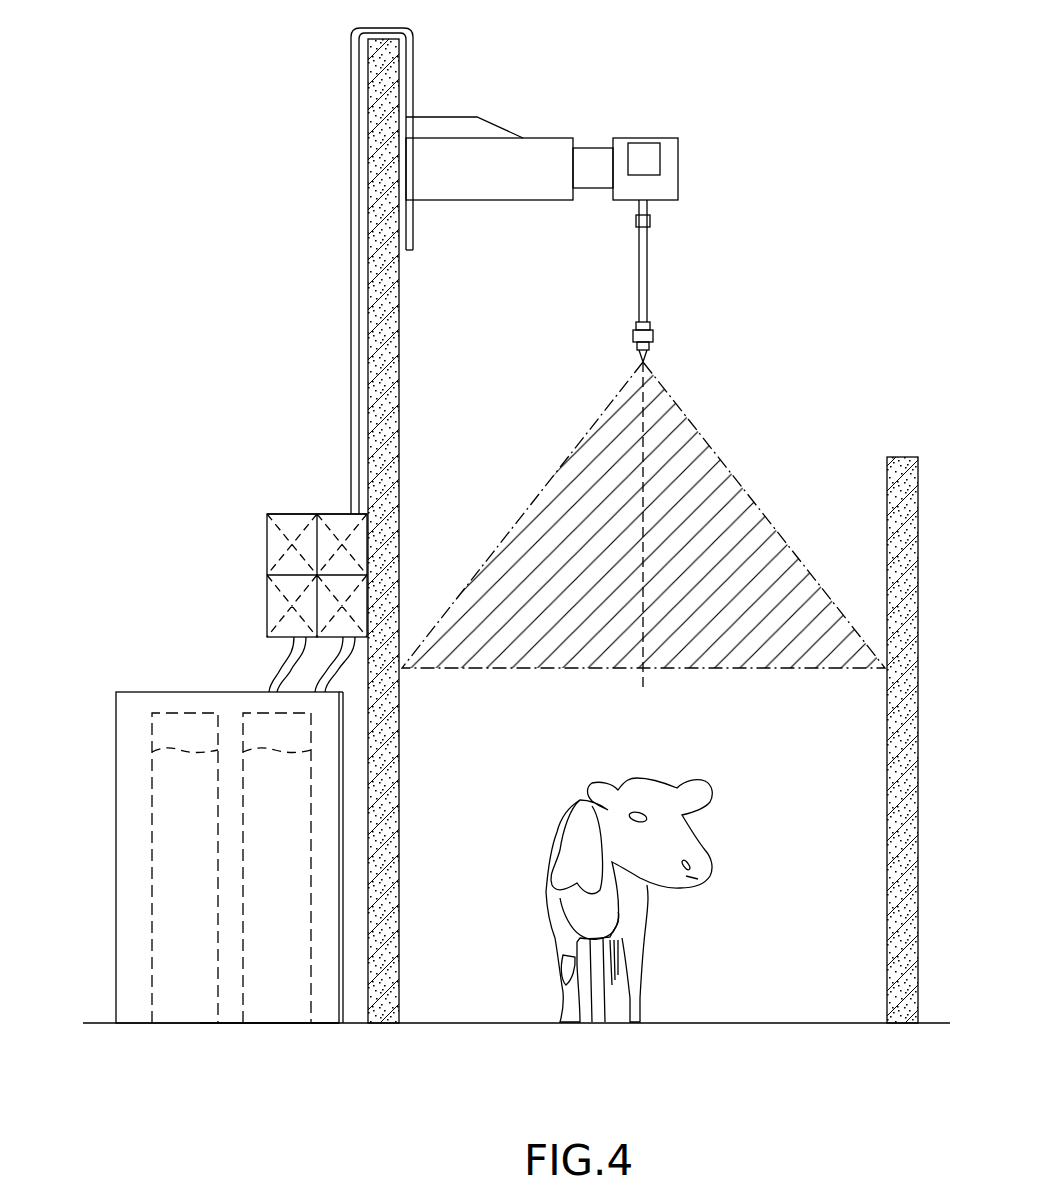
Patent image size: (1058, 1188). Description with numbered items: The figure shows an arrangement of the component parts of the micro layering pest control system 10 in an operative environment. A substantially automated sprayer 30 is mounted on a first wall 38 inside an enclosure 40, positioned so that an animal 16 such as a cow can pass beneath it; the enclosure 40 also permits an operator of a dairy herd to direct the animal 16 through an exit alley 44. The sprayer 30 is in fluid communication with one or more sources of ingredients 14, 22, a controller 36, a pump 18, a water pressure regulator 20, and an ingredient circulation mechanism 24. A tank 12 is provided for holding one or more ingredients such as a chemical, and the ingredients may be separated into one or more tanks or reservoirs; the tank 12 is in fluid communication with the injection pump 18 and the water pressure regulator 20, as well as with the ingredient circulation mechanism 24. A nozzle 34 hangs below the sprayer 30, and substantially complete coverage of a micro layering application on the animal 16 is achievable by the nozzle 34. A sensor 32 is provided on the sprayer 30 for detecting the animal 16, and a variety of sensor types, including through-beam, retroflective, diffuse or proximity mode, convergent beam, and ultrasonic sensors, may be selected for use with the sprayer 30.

The micro layering pest control system 10 is at (258, 72).
The tank 12 is at (116, 930).
The source of ingredients 14 is at (160, 846).
The animal 16 is at (550, 852).
The pump 18 is at (267, 612).
The water pressure regulator 20 is at (302, 640).
The source of ingredients 22 is at (285, 1015).
The ingredient circulation mechanism 24 is at (348, 526).
The substantially automated sprayer 30 is at (678, 172).
The sensor 32 is at (640, 160).
The nozzle 34 is at (653, 336).
The controller 36 is at (282, 512).
The first wall 38 is at (386, 92).
The enclosure 40 is at (740, 1005).
The exit alley 44 is at (475, 983).